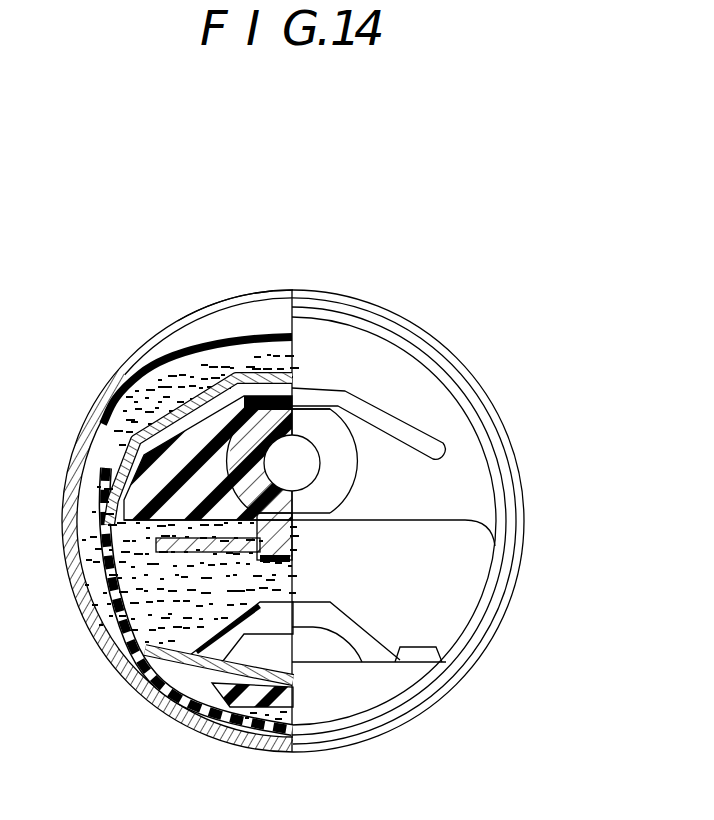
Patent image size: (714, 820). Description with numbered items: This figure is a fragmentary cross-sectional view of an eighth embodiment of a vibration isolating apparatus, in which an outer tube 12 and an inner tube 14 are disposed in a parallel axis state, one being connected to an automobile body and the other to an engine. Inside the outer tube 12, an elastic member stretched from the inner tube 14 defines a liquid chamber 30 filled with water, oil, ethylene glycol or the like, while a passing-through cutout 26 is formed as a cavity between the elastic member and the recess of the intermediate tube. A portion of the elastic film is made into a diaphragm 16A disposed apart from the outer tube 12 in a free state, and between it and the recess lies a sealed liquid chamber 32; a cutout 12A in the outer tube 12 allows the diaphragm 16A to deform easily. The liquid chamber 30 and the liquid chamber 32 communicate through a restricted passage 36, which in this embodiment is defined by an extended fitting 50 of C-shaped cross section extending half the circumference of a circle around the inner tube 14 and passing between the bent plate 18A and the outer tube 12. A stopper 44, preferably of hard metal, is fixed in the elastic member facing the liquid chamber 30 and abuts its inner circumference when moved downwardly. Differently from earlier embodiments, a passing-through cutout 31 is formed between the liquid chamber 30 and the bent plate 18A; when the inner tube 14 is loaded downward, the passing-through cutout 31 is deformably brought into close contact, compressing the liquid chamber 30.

The outer tube 12 is at (188, 722).
The cutout 12A is at (209, 311).
The inner tube 14 is at (357, 485).
The diaphragm 16A is at (265, 340).
The bent plate 18A is at (258, 712).
The passing-through cutout 26 is at (328, 393).
The liquid chamber 30 is at (197, 628).
The passing-through cutout 31 is at (325, 664).
The liquid chamber 32 is at (147, 402).
The restricted passage 36 is at (100, 622).
The stopper 44 is at (242, 553).
The extended fitting 50 is at (113, 578).